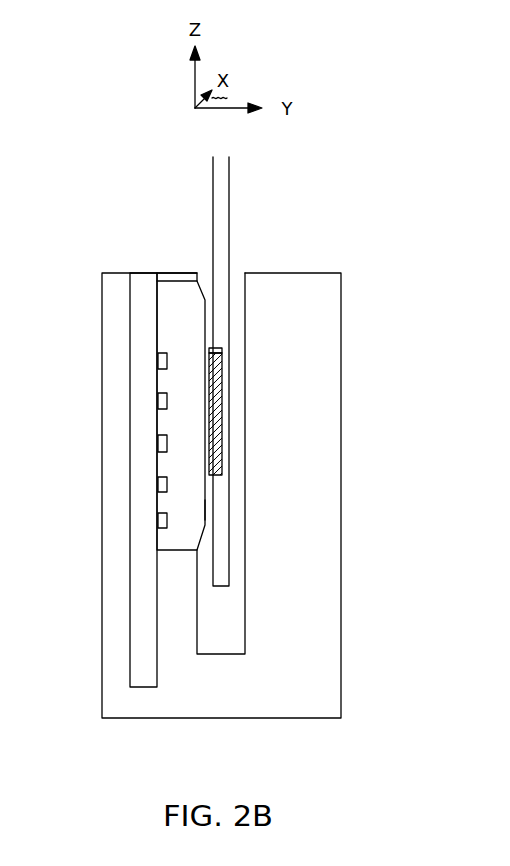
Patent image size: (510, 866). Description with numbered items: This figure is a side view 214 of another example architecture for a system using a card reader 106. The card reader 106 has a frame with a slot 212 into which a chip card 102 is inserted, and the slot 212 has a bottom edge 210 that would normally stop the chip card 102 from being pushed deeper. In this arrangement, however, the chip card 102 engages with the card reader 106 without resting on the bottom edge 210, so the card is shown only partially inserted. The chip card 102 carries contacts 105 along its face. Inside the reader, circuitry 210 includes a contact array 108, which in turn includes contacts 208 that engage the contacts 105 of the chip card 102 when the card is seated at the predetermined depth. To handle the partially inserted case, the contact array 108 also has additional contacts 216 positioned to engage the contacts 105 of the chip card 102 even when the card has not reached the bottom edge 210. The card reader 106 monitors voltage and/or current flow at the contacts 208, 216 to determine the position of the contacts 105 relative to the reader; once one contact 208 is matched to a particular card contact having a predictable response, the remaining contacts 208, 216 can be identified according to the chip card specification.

The chip card 102 is at (219, 315).
The contacts 105 is at (211, 468).
The card reader 106 is at (102, 303).
The contact array 108 is at (175, 540).
The contacts 208 is at (208, 514).
The bottom edge 210 is at (141, 381).
The slot 212 is at (237, 580).
The side view 214 is at (76, 791).
The additional contacts 216 is at (207, 317).